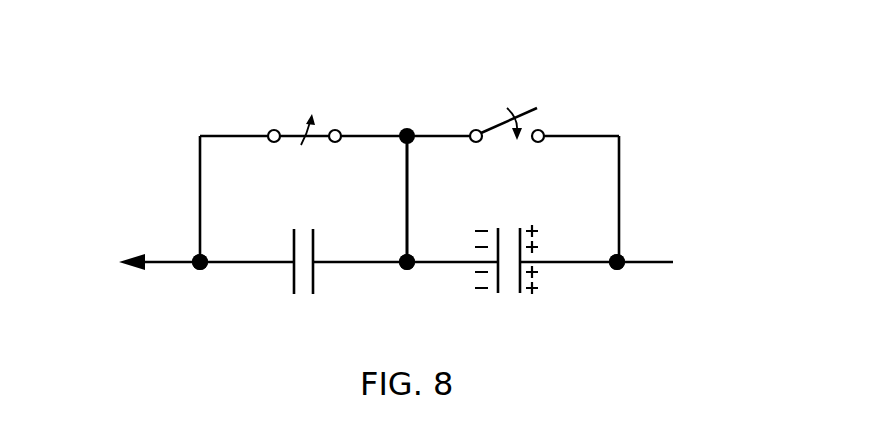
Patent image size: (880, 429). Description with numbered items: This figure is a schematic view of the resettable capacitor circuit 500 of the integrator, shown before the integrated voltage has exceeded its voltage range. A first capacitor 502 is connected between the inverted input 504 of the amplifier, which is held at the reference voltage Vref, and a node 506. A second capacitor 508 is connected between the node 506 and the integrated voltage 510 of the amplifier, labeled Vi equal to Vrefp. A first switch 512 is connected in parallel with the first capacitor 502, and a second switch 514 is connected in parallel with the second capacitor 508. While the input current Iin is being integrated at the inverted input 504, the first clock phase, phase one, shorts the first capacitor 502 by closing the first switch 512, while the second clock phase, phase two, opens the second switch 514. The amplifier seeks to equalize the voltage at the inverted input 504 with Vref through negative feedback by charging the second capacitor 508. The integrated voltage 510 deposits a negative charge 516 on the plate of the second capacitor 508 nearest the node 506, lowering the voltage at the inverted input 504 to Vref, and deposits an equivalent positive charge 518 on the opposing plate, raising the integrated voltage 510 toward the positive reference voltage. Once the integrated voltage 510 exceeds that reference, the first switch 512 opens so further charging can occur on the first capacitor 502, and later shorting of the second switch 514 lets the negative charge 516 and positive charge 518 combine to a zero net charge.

The resettable capacitor circuit 500 is at (673, 64).
The first capacitor 502 is at (302, 242).
The inverted input 504 is at (167, 260).
The node 506 is at (407, 214).
The second capacitor 508 is at (508, 233).
The integrated voltage 510 is at (645, 260).
The first switch 512 is at (301, 118).
The second switch 514 is at (490, 120).
The negative charge 516 is at (472, 280).
The positive charge 518 is at (540, 280).